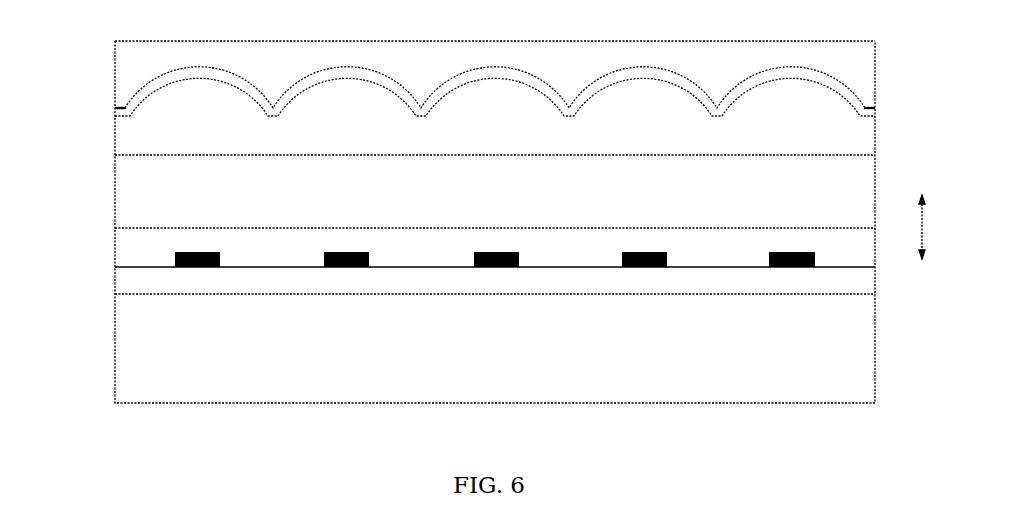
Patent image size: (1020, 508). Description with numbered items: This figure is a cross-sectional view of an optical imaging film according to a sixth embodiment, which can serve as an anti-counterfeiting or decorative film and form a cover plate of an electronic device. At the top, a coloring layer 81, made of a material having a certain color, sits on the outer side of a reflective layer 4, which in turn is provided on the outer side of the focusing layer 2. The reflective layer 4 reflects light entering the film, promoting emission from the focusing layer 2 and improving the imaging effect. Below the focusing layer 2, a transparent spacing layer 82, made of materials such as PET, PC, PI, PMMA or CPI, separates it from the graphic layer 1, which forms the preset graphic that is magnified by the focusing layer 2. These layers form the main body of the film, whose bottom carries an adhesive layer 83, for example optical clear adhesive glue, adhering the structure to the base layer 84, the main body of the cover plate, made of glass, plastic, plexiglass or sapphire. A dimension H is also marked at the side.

The coloring layer 81 is at (292, 48).
The focusing layer 2 is at (790, 88).
The reflective layer 4 is at (115, 109).
The spacing layer 82 is at (127, 193).
The graphic layer 1 is at (127, 244).
The adhesive layer 83 is at (127, 285).
The base layer 84 is at (802, 389).
The height of microlens layer H is at (932, 227).